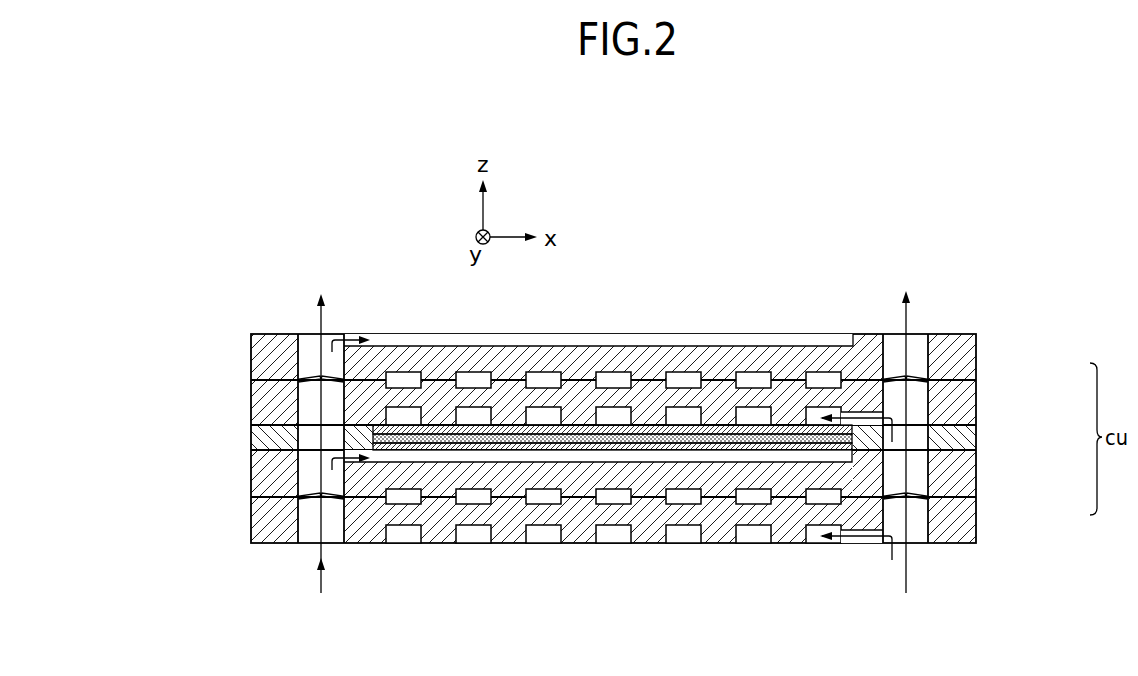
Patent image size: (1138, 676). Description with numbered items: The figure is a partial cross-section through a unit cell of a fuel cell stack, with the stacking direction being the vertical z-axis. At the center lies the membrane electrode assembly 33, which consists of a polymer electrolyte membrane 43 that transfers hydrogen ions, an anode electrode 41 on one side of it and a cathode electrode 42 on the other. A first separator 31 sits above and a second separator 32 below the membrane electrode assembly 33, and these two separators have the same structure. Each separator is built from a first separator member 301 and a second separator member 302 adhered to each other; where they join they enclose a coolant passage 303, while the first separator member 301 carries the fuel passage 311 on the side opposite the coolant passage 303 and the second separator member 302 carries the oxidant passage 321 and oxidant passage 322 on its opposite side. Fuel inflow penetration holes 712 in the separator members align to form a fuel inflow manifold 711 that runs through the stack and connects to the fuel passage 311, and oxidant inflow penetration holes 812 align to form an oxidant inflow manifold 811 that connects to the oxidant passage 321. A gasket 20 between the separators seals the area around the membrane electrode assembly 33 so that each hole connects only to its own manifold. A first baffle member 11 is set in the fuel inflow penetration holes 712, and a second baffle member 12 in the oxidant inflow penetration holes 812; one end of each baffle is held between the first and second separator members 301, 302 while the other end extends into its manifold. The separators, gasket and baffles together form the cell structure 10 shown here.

The housing 10 is at (604, 483).
The first baffle member 11 is at (893, 495).
The second baffle member 12 is at (308, 497).
The gasket 20 is at (262, 437).
The first separator 31 is at (668, 438).
The second separator 32 is at (1052, 483).
The first separator member 301 is at (963, 395).
The second separator member 302 is at (963, 353).
The coolant passage 303 is at (750, 377).
The fuel passage 311 is at (683, 413).
The oxidant passage 321 is at (632, 340).
The fuel flow channel 322 is at (682, 532).
The membrane electrode assembly 33 is at (612, 534).
The anode electrode 41 is at (515, 430).
The cathode electrode 42 is at (618, 447).
The polymer electrolyte membrane 43 is at (570, 437).
The fuel inflow manifold 711 is at (907, 576).
The fuel inflow penetration hole 712 is at (917, 340).
The oxidant inflow manifold 811 is at (322, 580).
The oxidant inflow penetration hole 812 is at (310, 342).